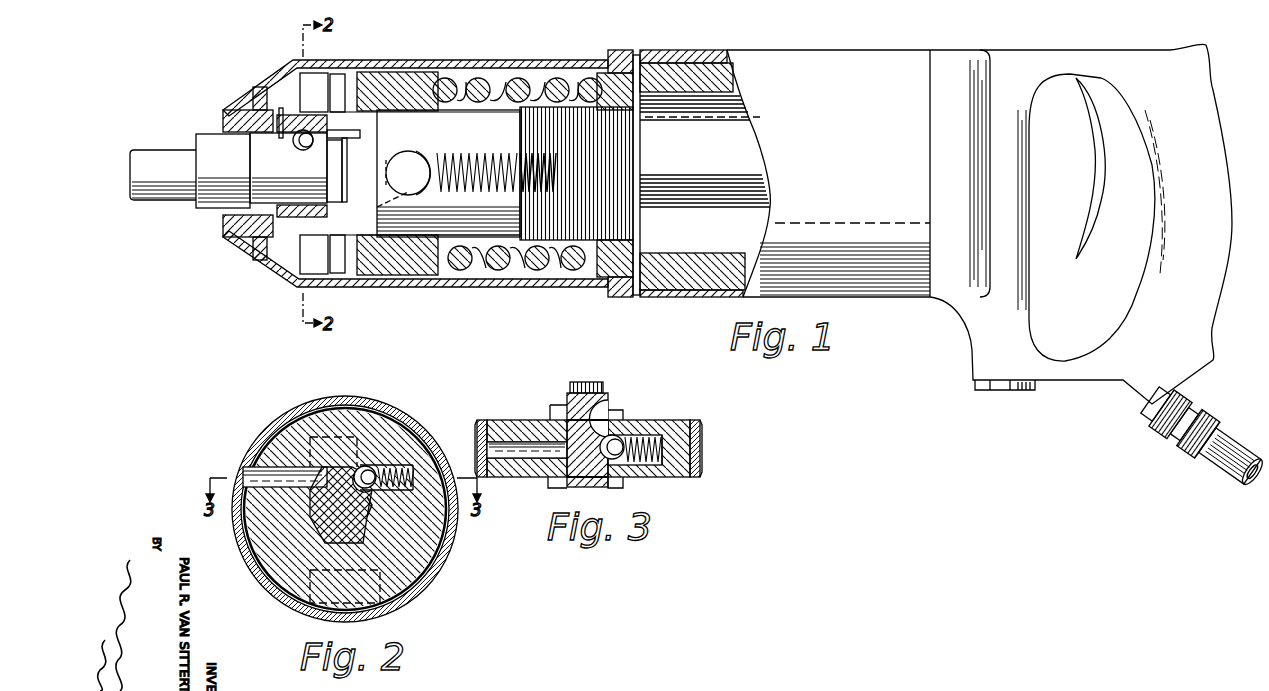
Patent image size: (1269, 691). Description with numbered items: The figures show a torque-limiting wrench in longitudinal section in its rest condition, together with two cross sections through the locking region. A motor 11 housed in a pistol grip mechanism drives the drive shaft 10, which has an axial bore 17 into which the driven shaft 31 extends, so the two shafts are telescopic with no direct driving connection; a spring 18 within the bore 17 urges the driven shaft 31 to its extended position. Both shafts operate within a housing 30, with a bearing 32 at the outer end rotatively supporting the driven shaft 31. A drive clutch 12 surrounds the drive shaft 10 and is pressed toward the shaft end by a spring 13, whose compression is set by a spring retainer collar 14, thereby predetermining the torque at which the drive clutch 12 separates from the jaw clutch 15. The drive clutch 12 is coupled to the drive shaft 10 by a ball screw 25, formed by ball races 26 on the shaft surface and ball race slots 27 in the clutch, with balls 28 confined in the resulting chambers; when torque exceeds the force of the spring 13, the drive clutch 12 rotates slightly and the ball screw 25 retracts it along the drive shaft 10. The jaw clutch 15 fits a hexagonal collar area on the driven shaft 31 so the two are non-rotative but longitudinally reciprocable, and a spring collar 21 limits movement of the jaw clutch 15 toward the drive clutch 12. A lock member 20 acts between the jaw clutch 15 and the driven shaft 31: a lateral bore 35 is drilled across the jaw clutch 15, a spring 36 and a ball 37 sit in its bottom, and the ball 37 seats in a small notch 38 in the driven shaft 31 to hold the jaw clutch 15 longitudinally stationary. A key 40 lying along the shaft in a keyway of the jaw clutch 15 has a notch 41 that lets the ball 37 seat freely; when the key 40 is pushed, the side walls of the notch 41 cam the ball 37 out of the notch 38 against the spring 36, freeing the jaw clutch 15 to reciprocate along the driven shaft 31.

In FIG. 1, the drive shaft 10 is at (698, 206).
In FIG. 1, the motor 11 is at (868, 50).
In FIG. 1, the drive clutch 12 is at (423, 276).
In FIG. 1, the spring 13 is at (516, 80).
In FIG. 1, the spring retainer collar 14 is at (606, 272).
In FIG. 1, the jaw clutch 15 is at (340, 268).
In FIG. 2, the jaw clutch 15 is at (447, 538).
In FIG. 3, the jaw clutch 15 is at (680, 420).
In FIG. 1, the axial bore 17 is at (470, 151).
In FIG. 1, the spring 18 is at (483, 151).
In FIG. 1, the lock member 20 is at (322, 140).
In FIG. 2, the lock member 20 is at (355, 517).
In FIG. 1, the spring collar 21 is at (340, 205).
In FIG. 3, the spring collar 21 is at (547, 420).
In FIG. 1, the ball screw 25 is at (409, 152).
In FIG. 1, the ball races 26 is at (430, 165).
In FIG. 1, the ball race slots 27 is at (384, 160).
In FIG. 1, the balls 28 is at (418, 154).
In FIG. 1, the housing 30 is at (478, 287).
In FIG. 2, the housing 30 is at (443, 565).
In FIG. 3, the housing 30 is at (703, 447).
In FIG. 1, the driven shaft 31 is at (160, 150).
In FIG. 3, the driven shaft 31 is at (557, 483).
In FIG. 1, the bearing 32 is at (225, 215).
In FIG. 2, the lateral bore 35 is at (393, 466).
In FIG. 3, the lateral bore 35 is at (670, 477).
In FIG. 2, the spring 36 is at (413, 470).
In FIG. 3, the spring 36 is at (642, 437).
In FIG. 1, the ball 37 is at (294, 146).
In FIG. 2, the ball 37 is at (368, 468).
In FIG. 3, the ball 37 is at (627, 473).
In FIG. 2, the notch 38 is at (376, 510).
In FIG. 1, the key 40 is at (282, 132).
In FIG. 2, the key 40 is at (338, 467).
In FIG. 3, the key 40 is at (570, 402).
In FIG. 3, the notch 41 is at (607, 402).